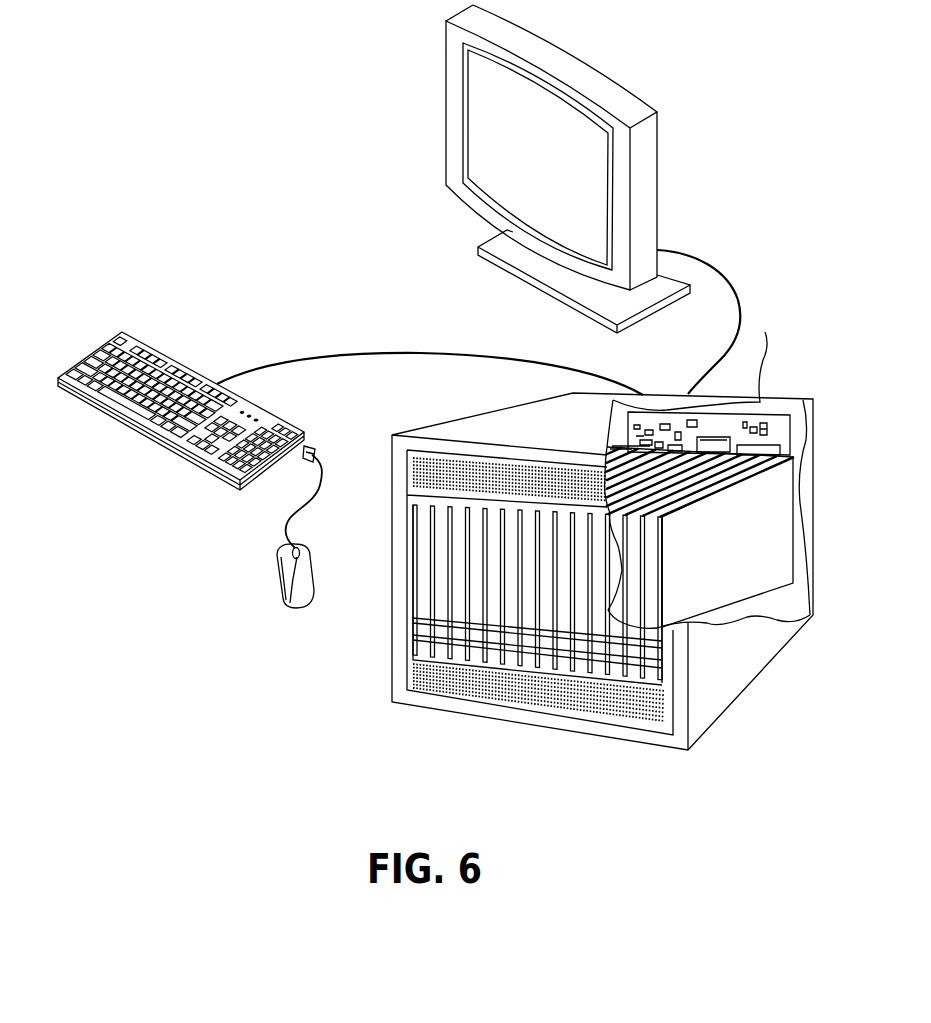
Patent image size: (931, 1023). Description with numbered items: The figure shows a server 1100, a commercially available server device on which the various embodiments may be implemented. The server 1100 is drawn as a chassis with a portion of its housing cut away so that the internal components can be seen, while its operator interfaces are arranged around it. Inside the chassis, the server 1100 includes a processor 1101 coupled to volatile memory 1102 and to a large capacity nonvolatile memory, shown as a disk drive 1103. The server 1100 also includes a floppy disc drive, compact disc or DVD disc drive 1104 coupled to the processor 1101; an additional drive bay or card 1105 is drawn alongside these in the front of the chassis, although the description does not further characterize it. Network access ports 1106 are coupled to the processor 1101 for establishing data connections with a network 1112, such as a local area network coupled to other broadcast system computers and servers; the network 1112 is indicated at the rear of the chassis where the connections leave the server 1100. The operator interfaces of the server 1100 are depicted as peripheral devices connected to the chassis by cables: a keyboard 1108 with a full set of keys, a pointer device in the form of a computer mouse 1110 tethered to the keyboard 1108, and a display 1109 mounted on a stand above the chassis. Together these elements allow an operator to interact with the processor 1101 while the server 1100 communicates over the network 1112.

The server 1100 is at (468, 413).
The processor 1101 is at (623, 442).
The volatile memory 1102 is at (777, 447).
The disk drive 1103 is at (452, 545).
The disc drive 1104 is at (418, 595).
The circuit card 1105 is at (433, 570).
The network access ports 1106 is at (717, 443).
The keyboard 1108 is at (182, 362).
The display 1109 is at (658, 197).
The computer mouse 1110 is at (282, 602).
The network 1112 is at (768, 343).